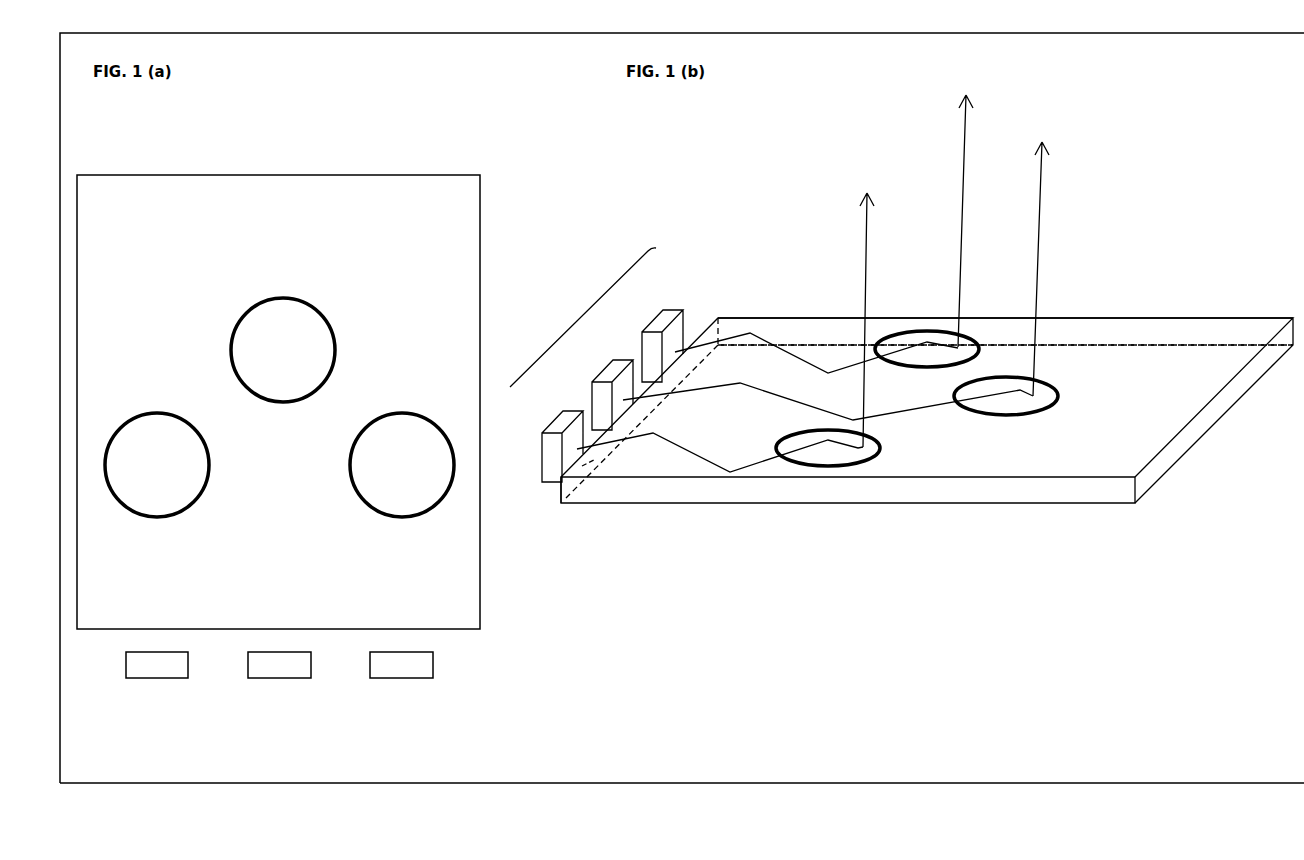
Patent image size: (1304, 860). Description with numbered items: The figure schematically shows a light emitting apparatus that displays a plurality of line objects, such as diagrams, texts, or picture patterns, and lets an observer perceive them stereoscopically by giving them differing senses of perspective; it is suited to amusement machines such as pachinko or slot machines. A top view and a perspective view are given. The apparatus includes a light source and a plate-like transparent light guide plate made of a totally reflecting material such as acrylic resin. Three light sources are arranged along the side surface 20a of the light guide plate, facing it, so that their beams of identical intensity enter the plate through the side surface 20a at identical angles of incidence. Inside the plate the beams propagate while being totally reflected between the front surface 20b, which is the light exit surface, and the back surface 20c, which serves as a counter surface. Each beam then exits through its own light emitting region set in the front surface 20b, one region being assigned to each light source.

The side surface 20a is at (578, 490).
The front surface 20b is at (1235, 325).
The back surface 20c is at (1152, 358).